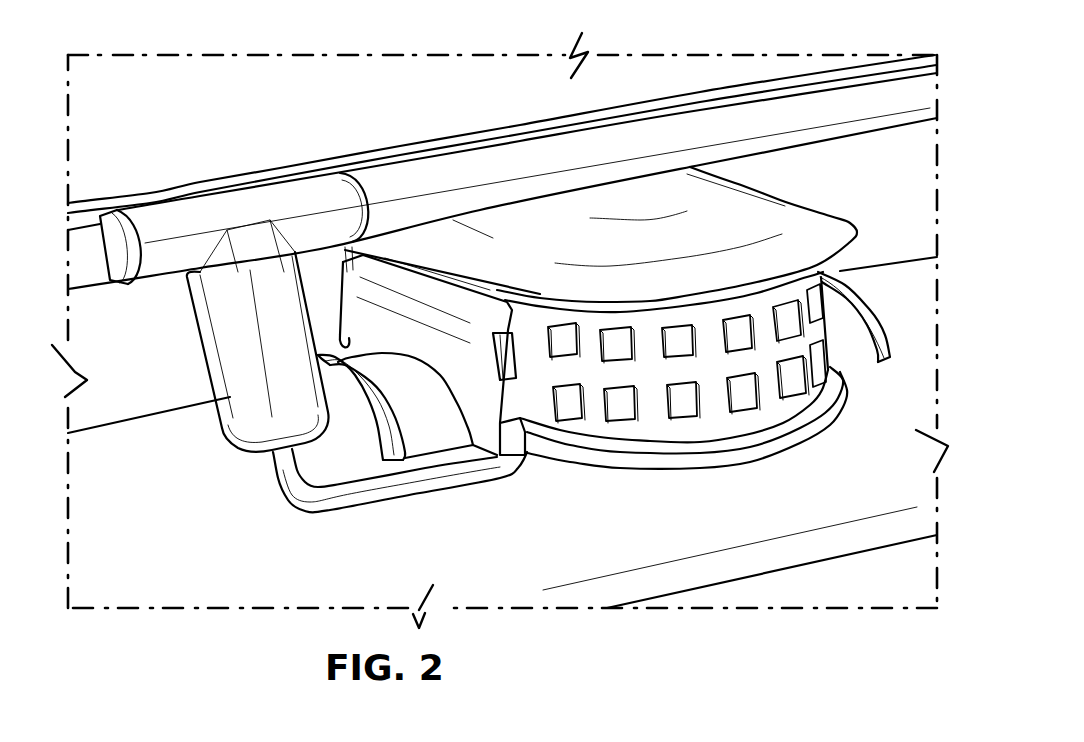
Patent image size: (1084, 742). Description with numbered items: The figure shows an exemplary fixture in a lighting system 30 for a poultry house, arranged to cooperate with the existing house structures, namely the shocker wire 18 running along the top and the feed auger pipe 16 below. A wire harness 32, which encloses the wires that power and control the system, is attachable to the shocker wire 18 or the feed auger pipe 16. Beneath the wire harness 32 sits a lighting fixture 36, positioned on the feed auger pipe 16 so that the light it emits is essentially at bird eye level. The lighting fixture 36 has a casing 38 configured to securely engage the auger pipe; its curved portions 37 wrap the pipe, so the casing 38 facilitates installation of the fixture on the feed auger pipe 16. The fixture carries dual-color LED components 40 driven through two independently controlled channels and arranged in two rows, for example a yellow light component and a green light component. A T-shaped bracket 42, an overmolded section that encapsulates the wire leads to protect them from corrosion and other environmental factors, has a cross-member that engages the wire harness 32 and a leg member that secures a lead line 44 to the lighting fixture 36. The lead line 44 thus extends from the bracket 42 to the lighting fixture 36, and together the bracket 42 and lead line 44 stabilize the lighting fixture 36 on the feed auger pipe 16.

The feed auger pipe 16 is at (732, 533).
The shocker wire 18 is at (552, 123).
The lighting system 30 is at (268, 140).
The wire harness 32 is at (828, 110).
The lighting fixture 36 is at (850, 413).
The curved portions 37 is at (430, 432).
The casing 38 is at (853, 337).
The dual-color LED components 40 is at (745, 340).
The T-shaped bracket 42 is at (247, 410).
The lead line 44 is at (327, 505).